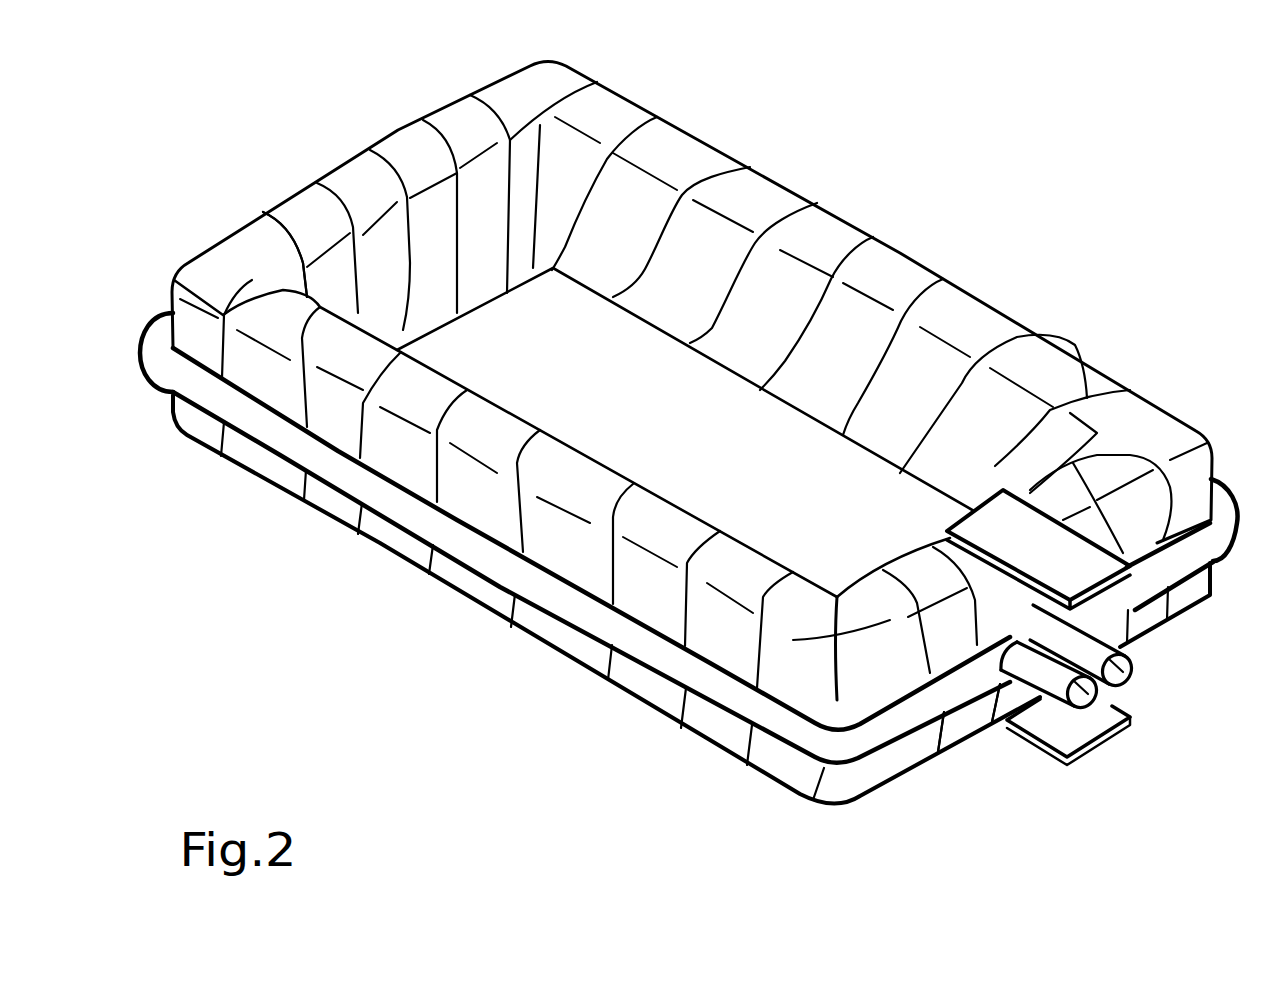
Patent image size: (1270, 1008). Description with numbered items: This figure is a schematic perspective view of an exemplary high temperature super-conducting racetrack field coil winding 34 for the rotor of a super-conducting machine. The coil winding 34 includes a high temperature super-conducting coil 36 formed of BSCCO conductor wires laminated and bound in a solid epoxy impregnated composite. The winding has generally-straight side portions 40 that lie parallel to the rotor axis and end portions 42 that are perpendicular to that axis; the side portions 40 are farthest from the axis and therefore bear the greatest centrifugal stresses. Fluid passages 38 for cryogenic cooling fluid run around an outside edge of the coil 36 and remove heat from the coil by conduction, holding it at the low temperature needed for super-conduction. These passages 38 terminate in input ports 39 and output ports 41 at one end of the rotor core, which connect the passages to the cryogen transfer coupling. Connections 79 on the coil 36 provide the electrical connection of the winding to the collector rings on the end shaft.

The HTS racetrack field coil winding 34 is at (293, 90).
The high temperature super-conducting coil 36 is at (950, 323).
The fluid passages 38 is at (493, 563).
The side portions 40 is at (339, 533).
The end portions 42 is at (272, 238).
The input ports 39 is at (1130, 683).
The output ports 41 is at (1128, 720).
The connections 79 is at (1084, 562).